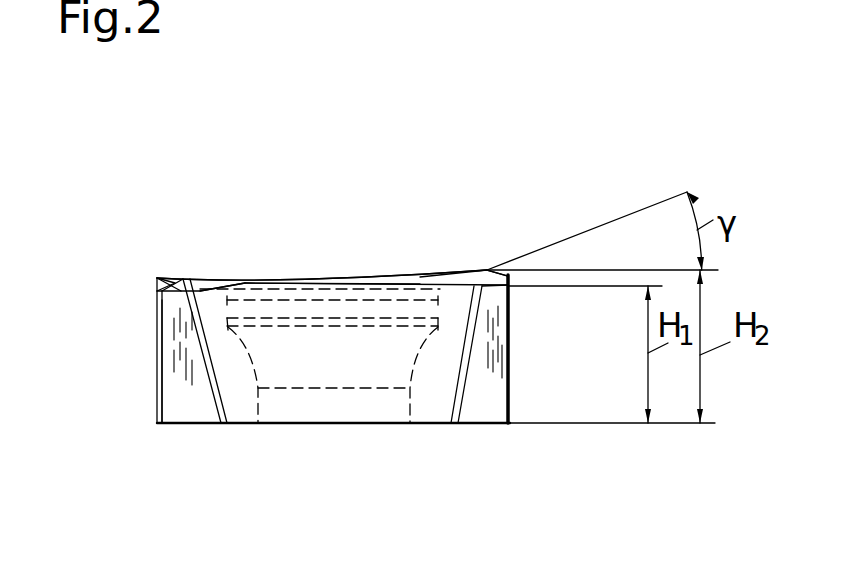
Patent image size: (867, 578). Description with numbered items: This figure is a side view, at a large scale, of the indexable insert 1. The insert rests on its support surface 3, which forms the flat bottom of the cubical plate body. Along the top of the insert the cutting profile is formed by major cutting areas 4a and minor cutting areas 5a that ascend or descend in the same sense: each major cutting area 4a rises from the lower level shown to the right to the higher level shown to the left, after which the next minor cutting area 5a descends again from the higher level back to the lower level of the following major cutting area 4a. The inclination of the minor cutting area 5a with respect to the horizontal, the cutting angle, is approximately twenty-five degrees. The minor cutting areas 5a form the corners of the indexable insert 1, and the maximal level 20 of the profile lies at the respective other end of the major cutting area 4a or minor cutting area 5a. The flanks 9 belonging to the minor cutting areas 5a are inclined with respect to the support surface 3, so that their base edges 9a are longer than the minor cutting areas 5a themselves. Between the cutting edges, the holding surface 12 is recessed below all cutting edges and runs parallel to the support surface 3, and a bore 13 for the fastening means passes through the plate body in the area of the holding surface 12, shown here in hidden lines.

The indexable insert 1 is at (400, 240).
The support surface 3 is at (368, 426).
The major cutting area 4a is at (280, 283).
The minor cutting area 5a is at (175, 283).
The flank 9 is at (178, 405).
The base edge 9a is at (202, 426).
The holding surface 12 is at (350, 282).
The bore 13 is at (267, 348).
The maximal level 20 is at (185, 283).